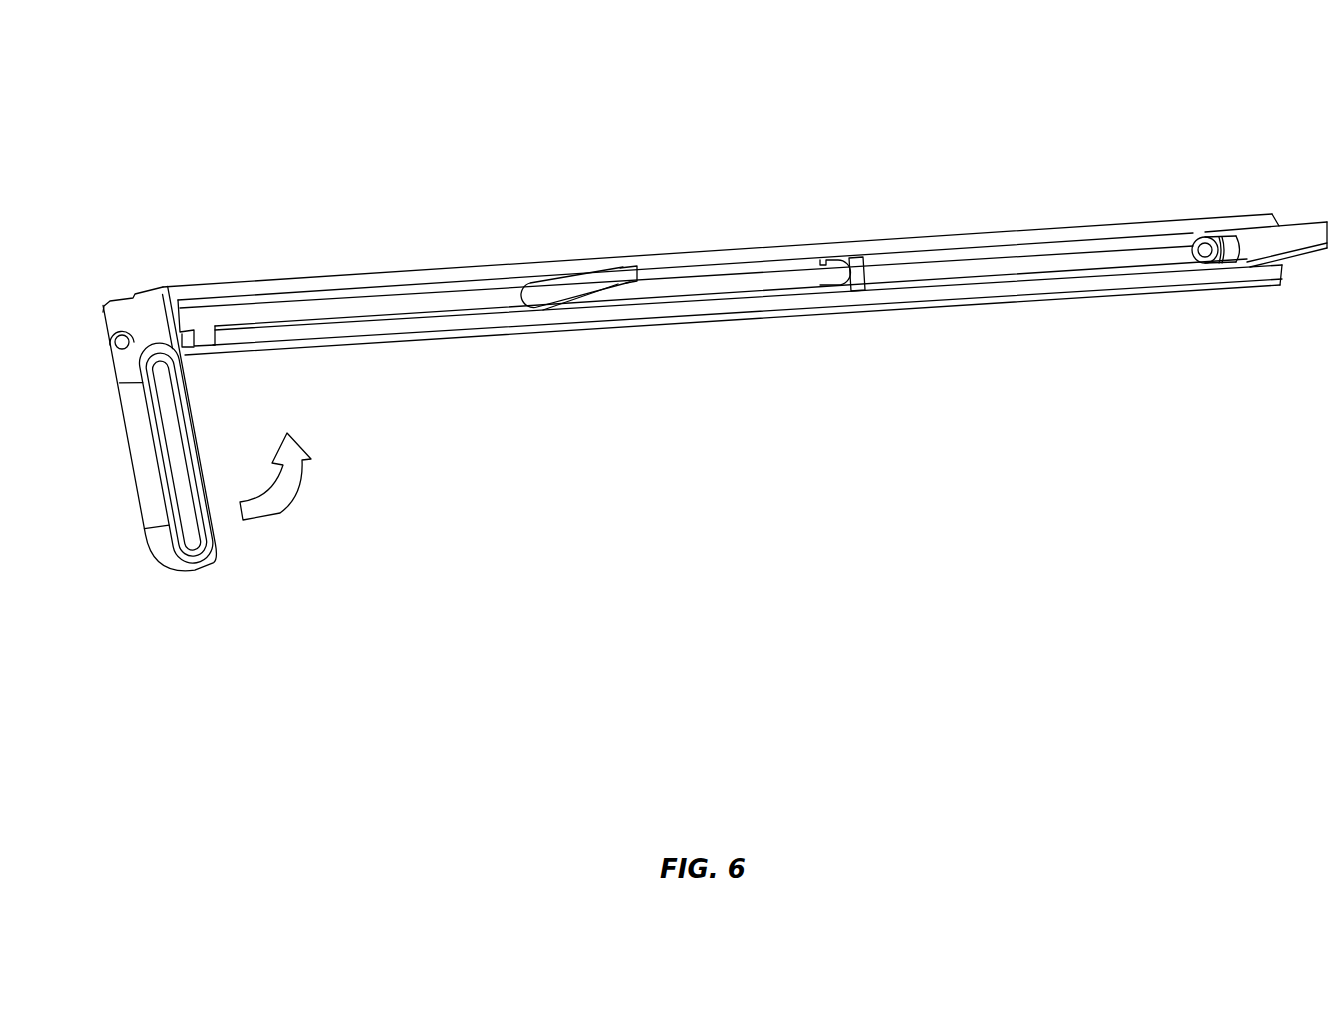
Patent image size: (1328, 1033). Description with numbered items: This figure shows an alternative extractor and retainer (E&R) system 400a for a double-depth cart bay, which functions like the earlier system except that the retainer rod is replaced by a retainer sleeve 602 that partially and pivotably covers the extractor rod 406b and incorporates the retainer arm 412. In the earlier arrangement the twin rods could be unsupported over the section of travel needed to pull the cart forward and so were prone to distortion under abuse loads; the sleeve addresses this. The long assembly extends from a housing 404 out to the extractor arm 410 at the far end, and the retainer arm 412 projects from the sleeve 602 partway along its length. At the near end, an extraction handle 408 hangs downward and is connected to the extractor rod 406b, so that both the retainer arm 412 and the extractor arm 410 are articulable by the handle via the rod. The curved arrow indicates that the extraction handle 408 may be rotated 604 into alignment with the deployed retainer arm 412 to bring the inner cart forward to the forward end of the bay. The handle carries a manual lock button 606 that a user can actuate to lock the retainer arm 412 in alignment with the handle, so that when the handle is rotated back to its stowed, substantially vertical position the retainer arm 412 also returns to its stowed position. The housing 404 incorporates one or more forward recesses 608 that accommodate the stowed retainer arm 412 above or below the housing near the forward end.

The E&R system 400a is at (118, 87).
The retainer sleeve 602 is at (370, 308).
The rotation of the extraction handle 604 is at (303, 497).
The manual lock button 606 is at (124, 339).
The forward recess 608 is at (203, 337).
The housing 404 is at (830, 247).
The extractor rod 406b is at (1075, 262).
The extraction handle 408 is at (145, 476).
The extractor arm 410 is at (1287, 242).
The retainer arm 412 is at (568, 292).